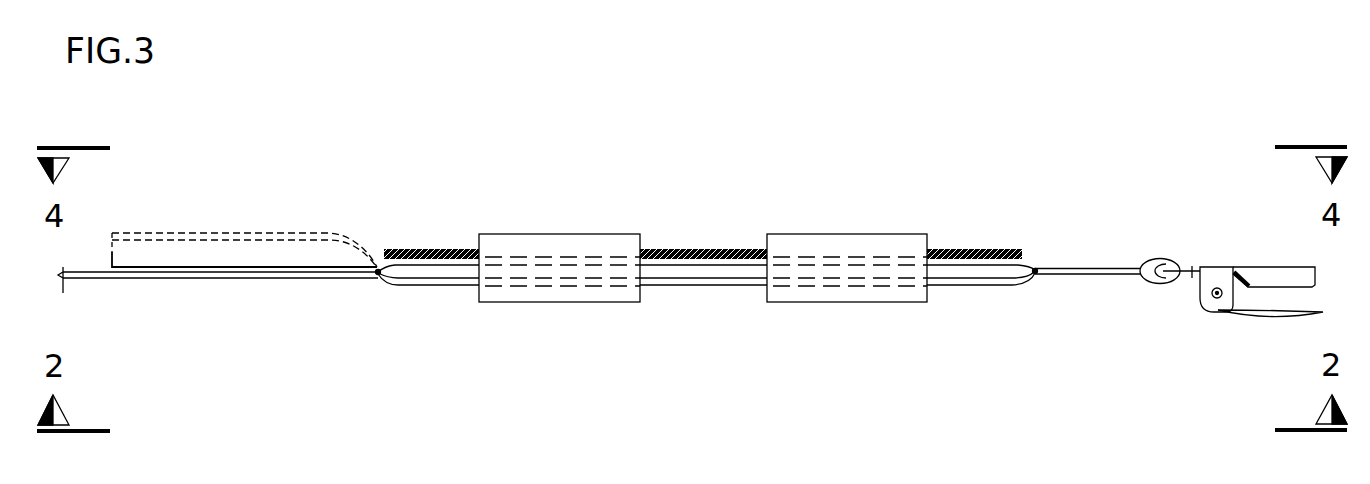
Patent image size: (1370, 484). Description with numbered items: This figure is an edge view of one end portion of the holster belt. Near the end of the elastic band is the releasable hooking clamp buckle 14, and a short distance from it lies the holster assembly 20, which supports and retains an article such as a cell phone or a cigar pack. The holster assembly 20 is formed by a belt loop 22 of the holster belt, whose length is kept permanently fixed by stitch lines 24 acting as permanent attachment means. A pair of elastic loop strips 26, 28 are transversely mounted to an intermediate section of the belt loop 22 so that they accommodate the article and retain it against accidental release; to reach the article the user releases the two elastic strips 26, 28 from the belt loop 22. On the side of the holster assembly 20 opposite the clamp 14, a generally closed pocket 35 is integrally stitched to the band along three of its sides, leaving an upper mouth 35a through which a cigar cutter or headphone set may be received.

The releasable hooking clamp buckle 14 is at (1266, 265).
The holster assembly 20 is at (703, 244).
The belt loop 22 is at (703, 268).
The stitch lines 24 is at (377, 271).
The elastic loop strip 26 is at (553, 247).
The elastic loop strip 28 is at (837, 248).
The closed pocket 35 is at (207, 237).
The upper mouth 35a is at (112, 262).